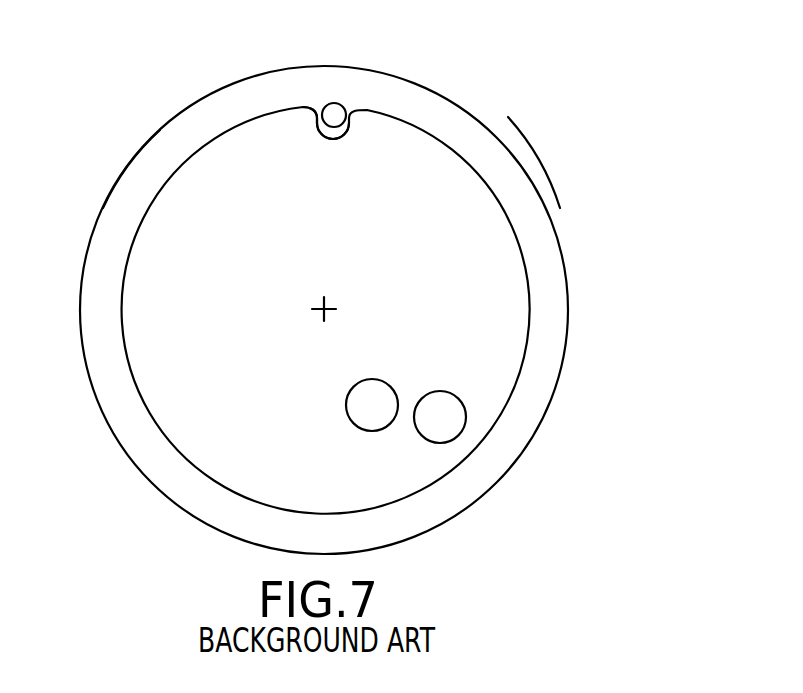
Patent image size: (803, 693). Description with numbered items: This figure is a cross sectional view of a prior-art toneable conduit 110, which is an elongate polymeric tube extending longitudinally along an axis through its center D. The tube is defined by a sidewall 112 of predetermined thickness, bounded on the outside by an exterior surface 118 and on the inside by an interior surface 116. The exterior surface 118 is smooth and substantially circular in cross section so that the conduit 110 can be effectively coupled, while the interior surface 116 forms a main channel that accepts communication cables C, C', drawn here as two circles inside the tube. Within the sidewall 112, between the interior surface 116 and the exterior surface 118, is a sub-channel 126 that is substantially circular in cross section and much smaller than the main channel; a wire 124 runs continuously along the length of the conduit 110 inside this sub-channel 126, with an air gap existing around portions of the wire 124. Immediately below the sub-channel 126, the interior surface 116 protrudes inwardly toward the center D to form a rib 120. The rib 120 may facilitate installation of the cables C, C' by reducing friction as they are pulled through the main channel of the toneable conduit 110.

The toneable conduit 110 is at (608, 318).
The sidewall 112 is at (524, 212).
The interior surface 116 is at (143, 397).
The exterior surface 118 is at (104, 208).
The rib 120 is at (330, 139).
The wire 124 is at (333, 117).
The sub-channel 126 is at (318, 106).
The center D is at (328, 306).
The communication cable C is at (372, 372).
The communication cable C' is at (440, 382).